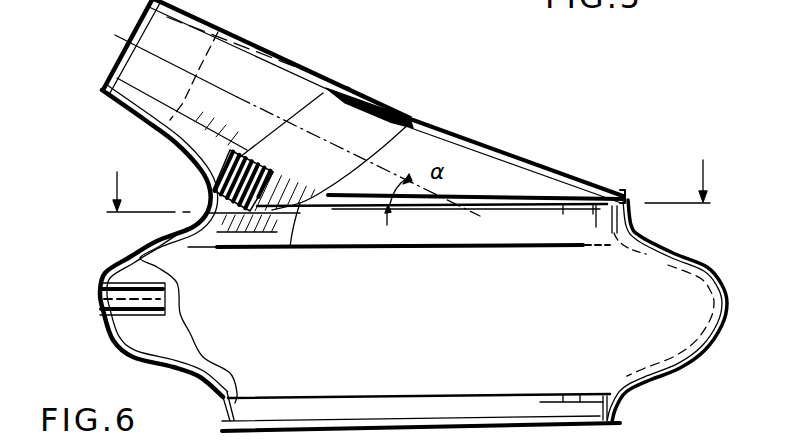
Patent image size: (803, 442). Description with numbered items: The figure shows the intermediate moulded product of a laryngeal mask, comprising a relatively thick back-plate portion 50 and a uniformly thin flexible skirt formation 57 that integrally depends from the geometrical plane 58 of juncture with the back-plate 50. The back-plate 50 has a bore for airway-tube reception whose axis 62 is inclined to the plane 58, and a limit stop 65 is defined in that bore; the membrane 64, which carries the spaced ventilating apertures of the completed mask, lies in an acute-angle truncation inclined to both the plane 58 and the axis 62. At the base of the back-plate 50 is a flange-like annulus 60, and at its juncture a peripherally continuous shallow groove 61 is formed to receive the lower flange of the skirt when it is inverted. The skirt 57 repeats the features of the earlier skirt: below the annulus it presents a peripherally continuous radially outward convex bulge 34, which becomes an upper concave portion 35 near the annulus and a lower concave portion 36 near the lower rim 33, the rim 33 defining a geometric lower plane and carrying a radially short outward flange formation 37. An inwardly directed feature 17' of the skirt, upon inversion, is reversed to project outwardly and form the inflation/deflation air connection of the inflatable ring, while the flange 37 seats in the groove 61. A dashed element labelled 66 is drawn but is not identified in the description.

The back-plate portion 50 is at (306, 62).
The axis of airway-tube reception 62 is at (122, 36).
The inflation line 66 is at (160, 16).
The limit stop 65 is at (194, 64).
The shallow groove 61 is at (470, 193).
The membrane 64 is at (318, 149).
The flange-like annulus 60 is at (297, 213).
The geometrical plane of juncture 58 is at (409, 174).
The convex bulge 34 is at (728, 312).
The upper concave portion 35 is at (634, 233).
The skirt formation 57 is at (736, 302).
The lower concave portion 36 is at (623, 392).
The lower rim 33 is at (339, 427).
The outward flange formation 37 is at (620, 425).
The inwardly directed feature 17' is at (170, 315).